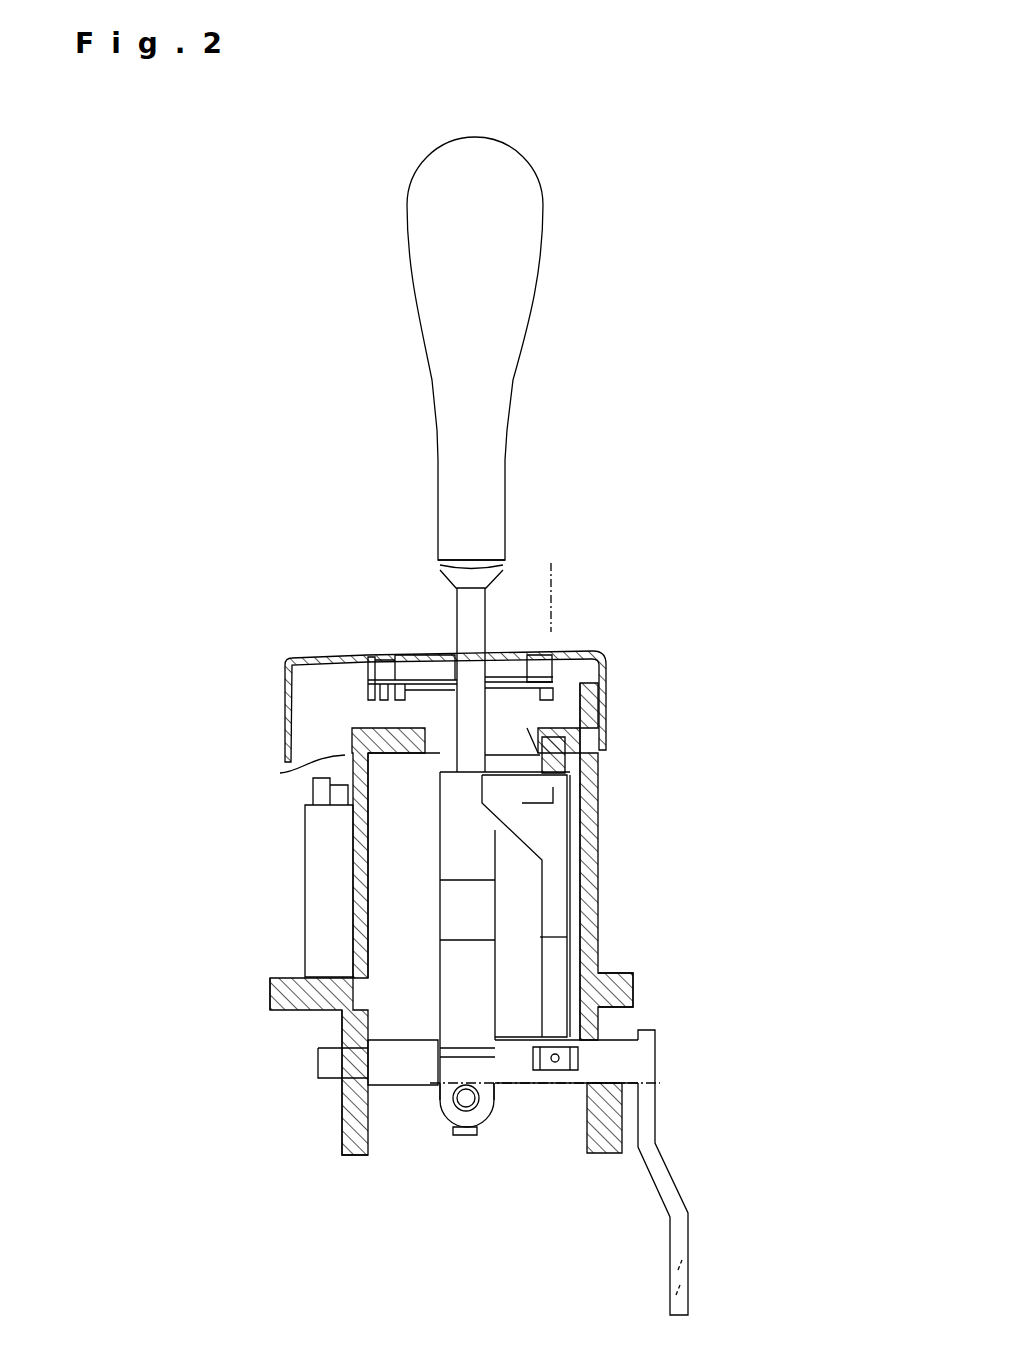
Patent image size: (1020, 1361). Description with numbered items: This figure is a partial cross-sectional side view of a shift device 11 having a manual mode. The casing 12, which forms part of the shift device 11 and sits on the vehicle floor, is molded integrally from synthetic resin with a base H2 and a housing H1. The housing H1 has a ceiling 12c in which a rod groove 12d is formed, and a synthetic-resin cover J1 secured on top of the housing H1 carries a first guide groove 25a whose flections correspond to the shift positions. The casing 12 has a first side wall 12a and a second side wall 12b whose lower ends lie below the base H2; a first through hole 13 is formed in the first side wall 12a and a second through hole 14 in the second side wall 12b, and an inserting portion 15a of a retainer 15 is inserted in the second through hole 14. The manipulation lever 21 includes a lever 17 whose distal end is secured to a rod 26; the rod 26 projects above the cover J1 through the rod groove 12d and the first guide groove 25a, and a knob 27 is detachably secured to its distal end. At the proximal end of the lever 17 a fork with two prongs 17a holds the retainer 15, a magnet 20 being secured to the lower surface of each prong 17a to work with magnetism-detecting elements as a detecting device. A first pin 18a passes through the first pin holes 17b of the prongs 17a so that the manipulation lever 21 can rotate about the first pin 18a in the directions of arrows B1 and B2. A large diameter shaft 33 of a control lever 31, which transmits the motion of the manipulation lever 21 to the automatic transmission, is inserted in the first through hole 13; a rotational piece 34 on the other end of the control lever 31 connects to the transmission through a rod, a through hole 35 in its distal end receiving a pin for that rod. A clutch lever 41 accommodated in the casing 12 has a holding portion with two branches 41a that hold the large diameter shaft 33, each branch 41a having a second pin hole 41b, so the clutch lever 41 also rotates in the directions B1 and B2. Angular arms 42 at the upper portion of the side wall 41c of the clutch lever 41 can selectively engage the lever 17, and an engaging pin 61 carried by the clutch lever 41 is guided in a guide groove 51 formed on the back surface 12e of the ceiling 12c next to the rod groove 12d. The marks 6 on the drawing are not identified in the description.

The shift device 11 is at (710, 256).
The arrow B1 is at (597, 160).
The arrow B2 is at (338, 186).
The knob 27 is at (520, 318).
The manipulation lever 21 is at (430, 382).
The rod 26 is at (486, 616).
The detail portion 6 is at (549, 563).
The cover J1 is at (403, 656).
The first guide groove 25a is at (542, 653).
The ceiling 12c is at (378, 727).
The rod groove 12d is at (527, 728).
The housing H1 is at (287, 770).
The back surface 12e is at (400, 755).
The guide groove 51 is at (566, 758).
The engaging pin 61 is at (560, 770).
The clutch lever 41 is at (572, 830).
The casing 12 is at (590, 856).
The first side wall 12a is at (598, 896).
The side wall 41c is at (535, 936).
The branches 41a is at (612, 1000).
The control lever 31 is at (652, 1040).
The first through hole 13 is at (642, 1077).
The rotational piece 34 is at (672, 1196).
The through hole 35 is at (690, 1275).
The angular arms 42 is at (518, 836).
The lever 17 is at (440, 932).
The prongs 17a is at (477, 1063).
The retainer 15 is at (400, 1045).
The inserting portion 15a is at (318, 1060).
The second through hole 14 is at (343, 1080).
The first pin hole 17b is at (440, 1098).
The first pin 18a is at (452, 1126).
The magnet 20 is at (464, 1112).
The large diameter shaft 33 is at (520, 1085).
The second pin hole 41b is at (553, 1070).
The second side wall 12b is at (353, 868).
The base H2 is at (270, 980).